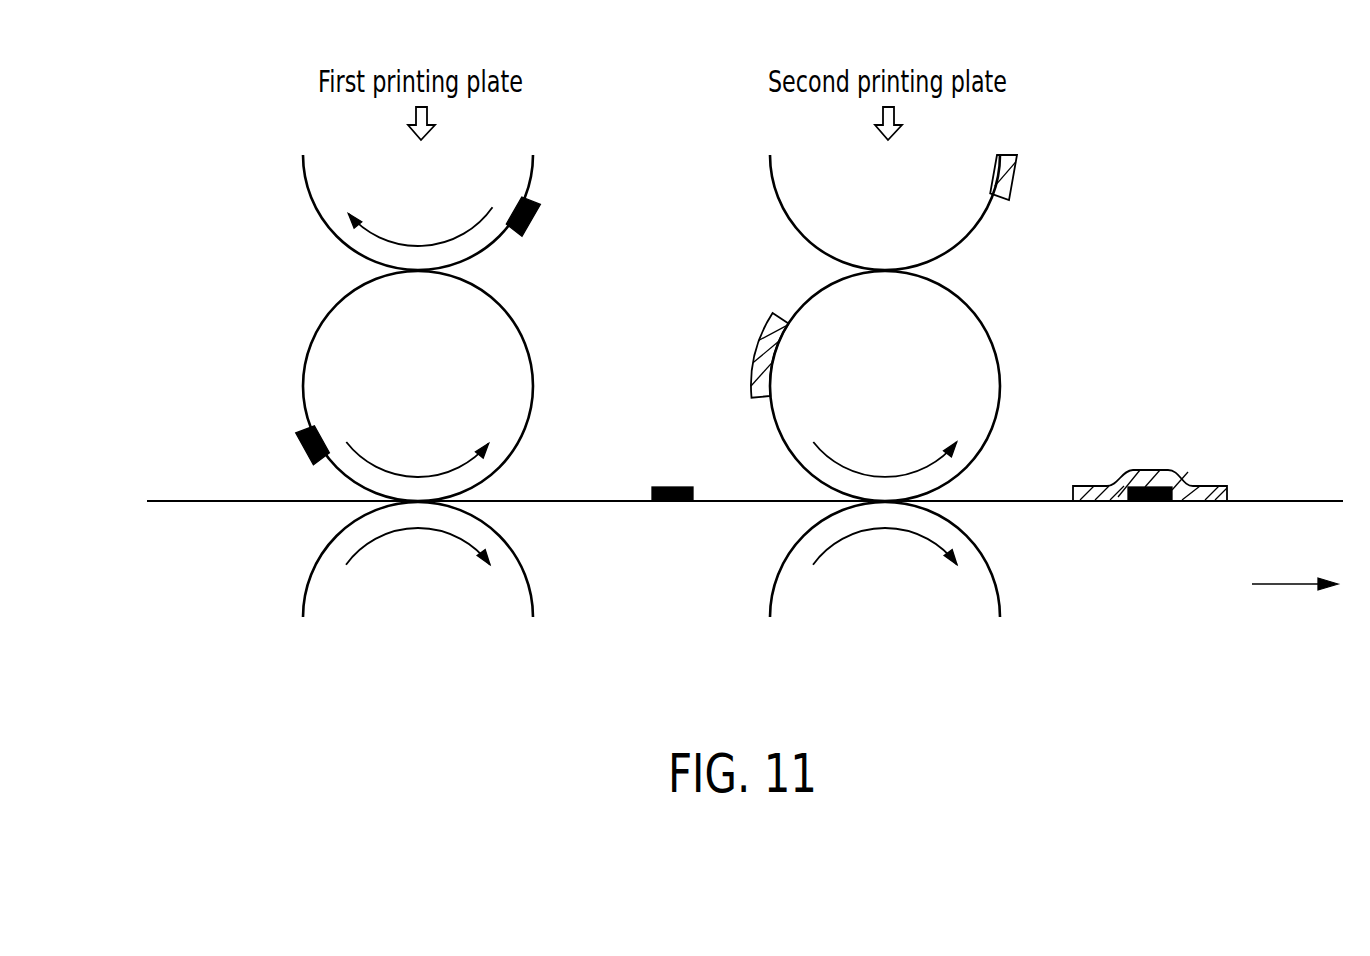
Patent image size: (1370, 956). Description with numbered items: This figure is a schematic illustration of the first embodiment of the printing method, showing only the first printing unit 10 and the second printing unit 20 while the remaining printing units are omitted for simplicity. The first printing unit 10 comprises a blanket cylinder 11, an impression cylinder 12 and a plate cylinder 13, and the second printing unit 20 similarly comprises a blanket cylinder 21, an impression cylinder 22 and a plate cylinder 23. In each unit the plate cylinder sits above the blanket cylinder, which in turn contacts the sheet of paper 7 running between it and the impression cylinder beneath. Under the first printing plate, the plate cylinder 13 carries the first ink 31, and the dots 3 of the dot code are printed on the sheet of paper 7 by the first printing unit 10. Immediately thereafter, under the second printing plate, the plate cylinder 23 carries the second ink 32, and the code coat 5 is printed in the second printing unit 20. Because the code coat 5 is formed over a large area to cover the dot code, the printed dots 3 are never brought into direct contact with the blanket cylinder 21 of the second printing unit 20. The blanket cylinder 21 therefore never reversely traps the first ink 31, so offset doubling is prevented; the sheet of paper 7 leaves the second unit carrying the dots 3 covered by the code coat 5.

The dots 3 is at (671, 487).
The code coat 5 is at (764, 327).
The sheet of paper 7 is at (207, 500).
The first printing unit 10 is at (421, 412).
The blanket cylinder 11 is at (305, 376).
The impression cylinder 12 is at (305, 580).
The plate cylinder 13 is at (305, 191).
The second printing unit 20 is at (922, 401).
The blanket cylinder 21 is at (1001, 373).
The impression cylinder 22 is at (1003, 596).
The plate cylinder 23 is at (975, 232).
The first ink 31 is at (540, 203).
The second ink 32 is at (1022, 160).